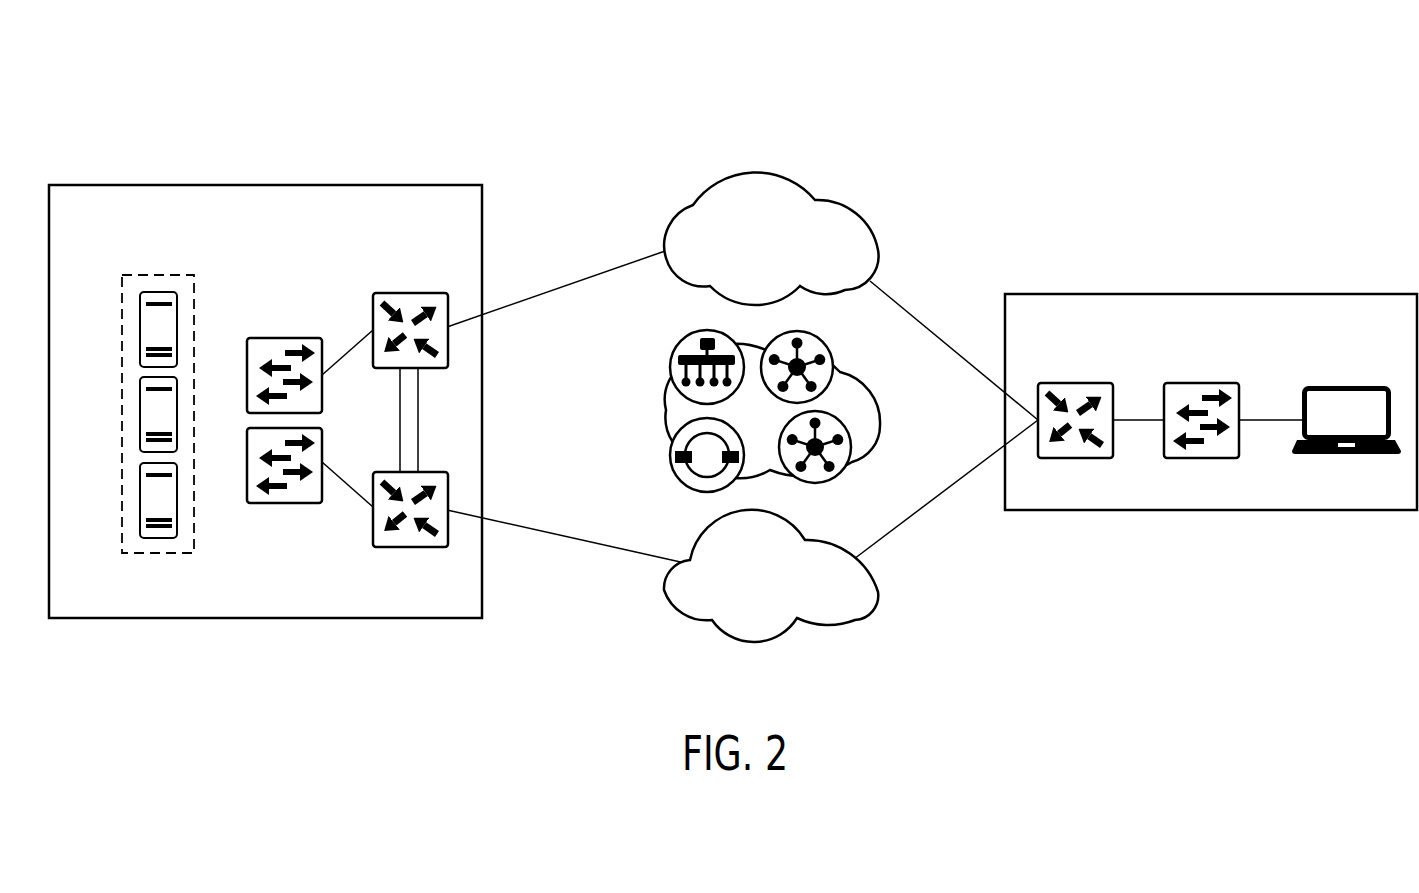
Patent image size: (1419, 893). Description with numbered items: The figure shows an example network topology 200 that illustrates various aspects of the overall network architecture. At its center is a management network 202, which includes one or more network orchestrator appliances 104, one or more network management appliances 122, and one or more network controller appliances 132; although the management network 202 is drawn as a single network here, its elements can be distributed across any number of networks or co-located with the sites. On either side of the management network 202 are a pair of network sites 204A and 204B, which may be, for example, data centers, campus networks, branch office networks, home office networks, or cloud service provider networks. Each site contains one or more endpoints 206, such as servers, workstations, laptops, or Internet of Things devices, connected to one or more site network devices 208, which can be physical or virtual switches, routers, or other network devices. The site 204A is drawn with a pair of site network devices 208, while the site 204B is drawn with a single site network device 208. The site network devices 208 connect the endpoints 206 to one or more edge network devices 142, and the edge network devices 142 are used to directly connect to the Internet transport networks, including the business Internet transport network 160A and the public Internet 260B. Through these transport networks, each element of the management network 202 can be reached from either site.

The network topology 200 is at (919, 184).
The network site 204A is at (342, 236).
The network site 204B is at (1287, 344).
The endpoint 206 is at (140, 328).
The site network device 208 is at (268, 338).
The edge network device 142 is at (408, 293).
The Internet transport network 160A is at (778, 288).
The public internet 260B is at (775, 620).
The management network 202 is at (877, 415).
The network management appliance 122 is at (674, 342).
The network controller appliance 132 is at (822, 338).
The network orchestrator appliance 104 is at (680, 487).